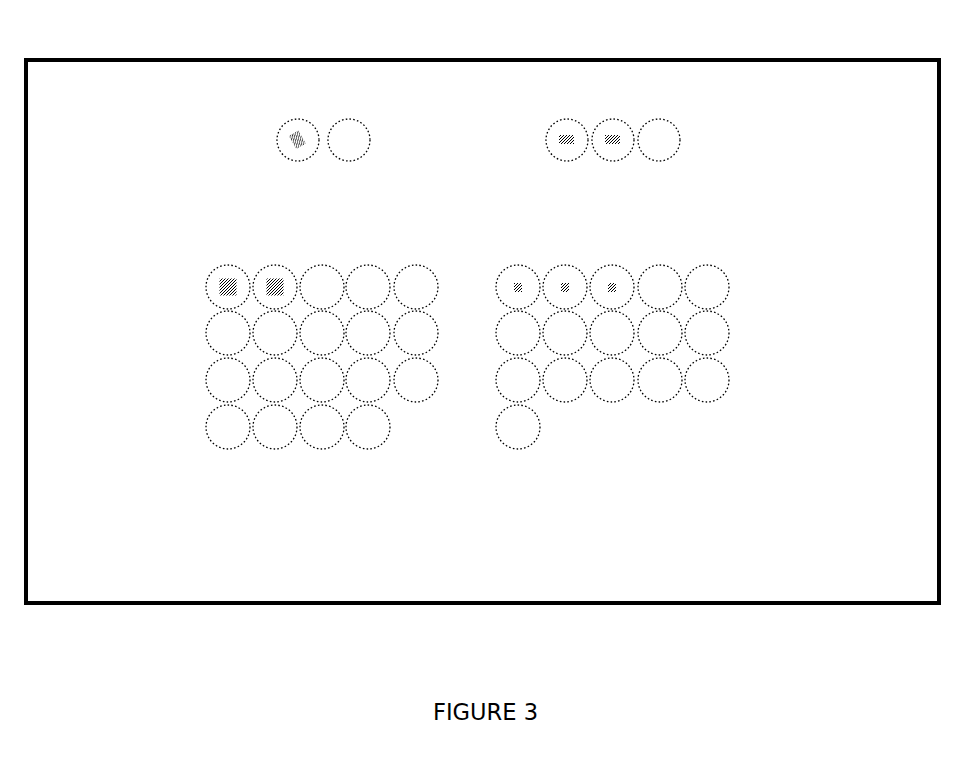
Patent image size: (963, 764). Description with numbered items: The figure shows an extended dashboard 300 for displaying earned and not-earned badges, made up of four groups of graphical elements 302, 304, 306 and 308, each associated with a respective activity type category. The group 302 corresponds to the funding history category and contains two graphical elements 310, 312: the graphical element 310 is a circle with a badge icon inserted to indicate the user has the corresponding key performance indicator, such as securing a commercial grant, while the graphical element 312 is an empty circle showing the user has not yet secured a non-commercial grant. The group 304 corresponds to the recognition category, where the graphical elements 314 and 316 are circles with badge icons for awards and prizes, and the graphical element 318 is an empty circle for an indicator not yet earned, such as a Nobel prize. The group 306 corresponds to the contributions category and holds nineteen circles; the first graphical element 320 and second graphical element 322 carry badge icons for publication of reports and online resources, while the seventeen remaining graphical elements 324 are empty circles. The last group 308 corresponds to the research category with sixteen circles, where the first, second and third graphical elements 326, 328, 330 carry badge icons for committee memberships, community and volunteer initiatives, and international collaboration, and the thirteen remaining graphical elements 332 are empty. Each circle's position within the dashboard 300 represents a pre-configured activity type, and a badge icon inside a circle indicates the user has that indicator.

The extended dashboard 300 is at (758, 58).
The group of graphical elements 302 is at (276, 150).
The group of graphical elements 304 is at (708, 151).
The group of graphical elements 306 is at (254, 365).
The group of graphical elements 308 is at (650, 365).
The graphical element 310 is at (303, 120).
The graphical element 312 is at (363, 120).
The graphical element 314 is at (562, 120).
The graphical element 316 is at (618, 118).
The graphical element 318 is at (675, 122).
The first graphical element 320 is at (212, 283).
The second graphical element 322 is at (268, 268).
The remaining graphical elements 324 is at (370, 265).
The first graphical element 326 is at (502, 273).
The second graphical element 328 is at (595, 248).
The third graphical element 330 is at (612, 267).
The remaining graphical elements 332 is at (718, 288).